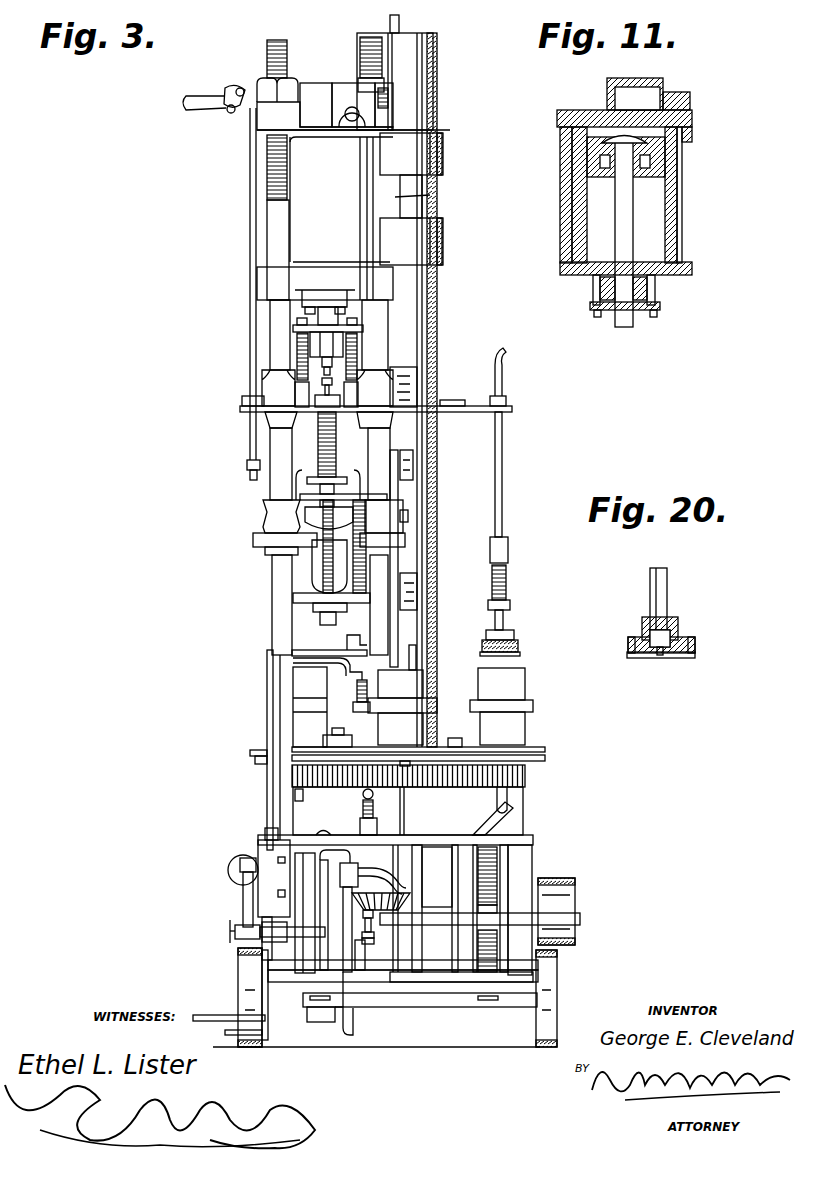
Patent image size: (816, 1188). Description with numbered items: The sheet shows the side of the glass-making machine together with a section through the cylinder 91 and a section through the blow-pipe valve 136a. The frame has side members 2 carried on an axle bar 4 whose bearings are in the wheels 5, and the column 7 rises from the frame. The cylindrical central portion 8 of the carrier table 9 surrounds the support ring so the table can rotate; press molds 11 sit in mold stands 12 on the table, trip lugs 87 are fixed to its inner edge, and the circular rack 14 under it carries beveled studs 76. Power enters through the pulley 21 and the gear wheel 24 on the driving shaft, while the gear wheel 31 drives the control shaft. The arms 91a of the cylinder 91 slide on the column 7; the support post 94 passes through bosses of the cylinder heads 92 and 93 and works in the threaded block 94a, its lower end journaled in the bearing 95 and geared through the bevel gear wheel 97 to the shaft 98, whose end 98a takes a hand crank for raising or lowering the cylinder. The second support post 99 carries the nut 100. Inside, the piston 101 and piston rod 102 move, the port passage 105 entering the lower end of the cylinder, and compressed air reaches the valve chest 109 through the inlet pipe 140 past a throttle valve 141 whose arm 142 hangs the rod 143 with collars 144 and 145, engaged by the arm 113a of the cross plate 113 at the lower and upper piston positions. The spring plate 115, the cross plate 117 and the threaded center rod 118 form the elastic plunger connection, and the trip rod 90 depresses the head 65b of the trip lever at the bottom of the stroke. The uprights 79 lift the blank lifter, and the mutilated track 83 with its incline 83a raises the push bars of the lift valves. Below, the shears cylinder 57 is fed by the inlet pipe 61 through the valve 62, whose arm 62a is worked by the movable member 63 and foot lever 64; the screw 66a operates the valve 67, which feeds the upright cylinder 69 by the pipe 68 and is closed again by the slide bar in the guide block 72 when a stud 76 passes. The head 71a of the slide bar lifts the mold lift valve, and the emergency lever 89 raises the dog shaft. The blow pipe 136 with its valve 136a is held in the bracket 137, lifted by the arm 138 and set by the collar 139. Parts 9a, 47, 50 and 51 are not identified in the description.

In FIG. 3, the side members 2 is at (395, 908).
In FIG. 3, the axle bar 4 is at (472, 1000).
In FIG. 3, the wheels 5 is at (558, 1045).
In FIG. 3, the column 7 is at (440, 302).
In FIG. 3, the cylindrical central portion 8 is at (408, 811).
In FIG. 3, the carrier table 9 is at (548, 752).
In FIG. 3, the table plate lug 9a is at (405, 761).
In FIG. 3, the press molds 11 is at (501, 684).
In FIG. 3, the mold stands 12 is at (501, 722).
In FIG. 3, the circular rack 14 is at (527, 775).
In FIG. 3, the pulley 21 is at (556, 911).
In FIG. 3, the gear wheel 24 is at (497, 857).
In FIG. 3, the gear wheel 31 is at (300, 905).
In FIG. 3, the spring 47 is at (357, 678).
In FIG. 3, the plate 50 is at (318, 660).
In FIG. 3, the plate 51 is at (300, 650).
In FIG. 3, the cylinder 57 is at (230, 872).
In FIG. 3, the inlet pipe 61 is at (235, 927).
In FIG. 3, the valve 62 is at (246, 860).
In FIG. 3, the arm 62a is at (258, 840).
In FIG. 3, the movable member 63 is at (268, 830).
In FIG. 3, the foot lever 64 is at (235, 1036).
In FIG. 3, the head 65b is at (405, 886).
In FIG. 3, the screw 66a is at (374, 940).
In FIG. 3, the valve 67 is at (343, 917).
In FIG. 3, the pipe 68 is at (350, 1036).
In FIG. 3, the upright cylinder 69 is at (322, 1022).
In FIG. 3, the head 71a is at (324, 830).
In FIG. 3, the guide block 72 is at (360, 826).
In FIG. 3, the beveled studs 76 is at (373, 800).
In FIG. 3, the uprights 79 is at (267, 668).
In FIG. 3, the mutilated track 83 is at (510, 818).
In FIG. 3, the incline 83a is at (510, 828).
In FIG. 3, the trip lugs 87 is at (330, 745).
In FIG. 3, the emergency lever 89 is at (214, 1015).
In FIG. 3, the trip rod 90 is at (400, 560).
In FIG. 3, the cylinder 91 is at (341, 218).
In FIG. 11, the cylinder 91 is at (680, 232).
In FIG. 3, the arms 91a is at (411, 199).
In FIG. 3, the cylinder head 92 is at (312, 268).
In FIG. 11, the cylinder head 92 is at (580, 270).
In FIG. 3, the cylinder head 93 is at (317, 128).
In FIG. 11, the cylinder head 93 is at (590, 140).
In FIG. 3, the support post 94 is at (395, 440).
In FIG. 3, the threaded block 94a is at (422, 197).
In FIG. 3, the bearing 95 is at (408, 905).
In FIG. 3, the bevel gear wheel 97 is at (372, 938).
In FIG. 3, the shaft 98 is at (443, 925).
In FIG. 3, the end 98a is at (582, 918).
In FIG. 3, the support post 99 is at (272, 580).
In FIG. 3, the nut 100 is at (292, 92).
In FIG. 11, the piston 101 is at (653, 173).
In FIG. 11, the piston rod 102 is at (633, 224).
In FIG. 11, the port passage 105 is at (568, 200).
In FIG. 3, the valve chest 109 is at (312, 92).
In FIG. 11, the valve chest 109 is at (665, 90).
In FIG. 3, the cross plate 113 is at (312, 414).
In FIG. 3, the arm 113a is at (240, 411).
In FIG. 3, the spring plate 115 is at (293, 330).
In FIG. 3, the cross plate 117 is at (253, 539).
In FIG. 3, the threaded center rod 118 is at (335, 418).
In FIG. 3, the blow pipe 136 is at (500, 456).
In FIG. 20, the blow pipe 136 is at (667, 583).
In FIG. 3, the valve 136a is at (508, 648).
In FIG. 20, the valve 136a is at (680, 625).
In FIG. 3, the bracket 137 is at (508, 552).
In FIG. 3, the arm 138 is at (450, 408).
In FIG. 3, the collar 139 is at (505, 398).
In FIG. 3, the inlet pipe 140 is at (195, 112).
In FIG. 3, the throttle valve 141 is at (233, 88).
In FIG. 3, the arm 142 is at (228, 116).
In FIG. 3, the rod 143 is at (250, 222).
In FIG. 3, the collar 144 is at (247, 466).
In FIG. 3, the collar 145 is at (245, 398).